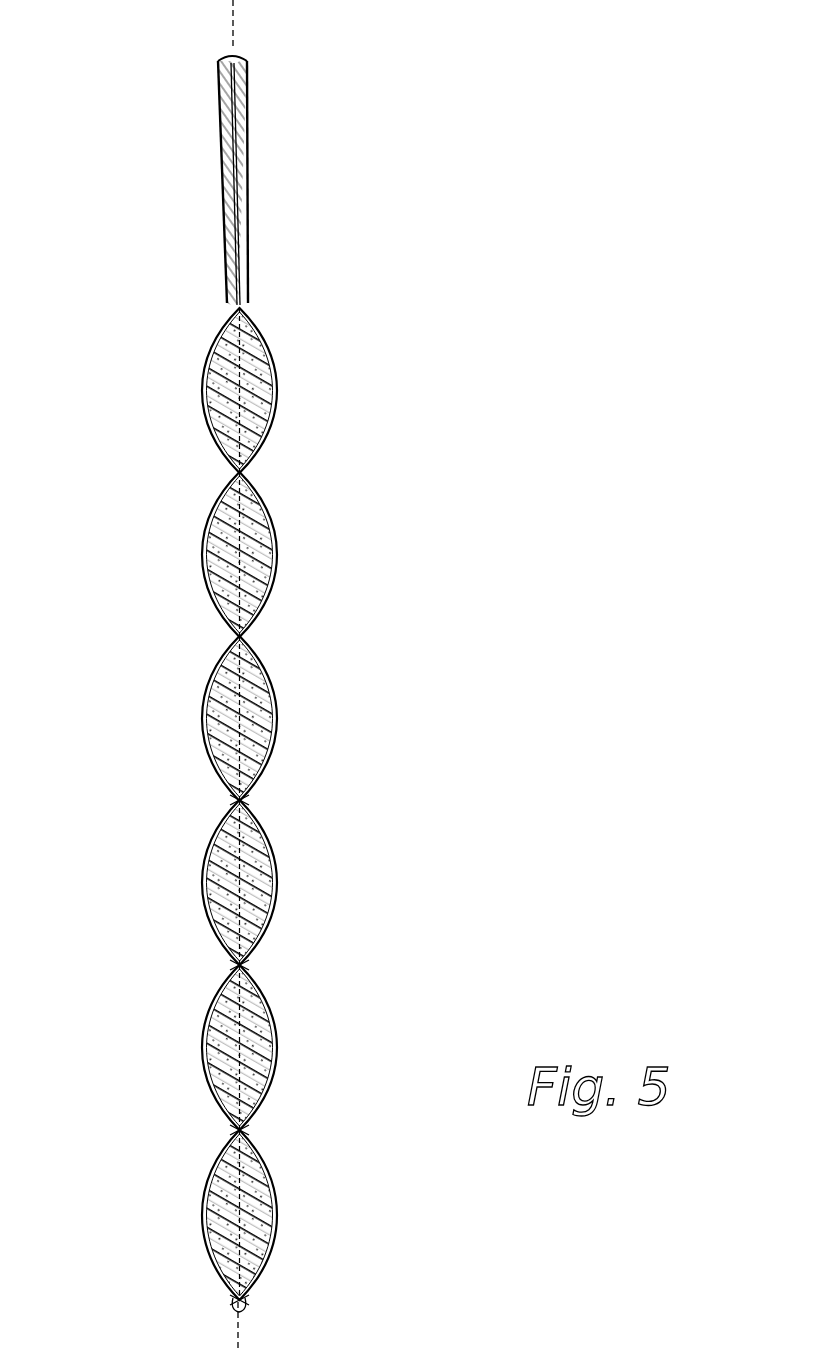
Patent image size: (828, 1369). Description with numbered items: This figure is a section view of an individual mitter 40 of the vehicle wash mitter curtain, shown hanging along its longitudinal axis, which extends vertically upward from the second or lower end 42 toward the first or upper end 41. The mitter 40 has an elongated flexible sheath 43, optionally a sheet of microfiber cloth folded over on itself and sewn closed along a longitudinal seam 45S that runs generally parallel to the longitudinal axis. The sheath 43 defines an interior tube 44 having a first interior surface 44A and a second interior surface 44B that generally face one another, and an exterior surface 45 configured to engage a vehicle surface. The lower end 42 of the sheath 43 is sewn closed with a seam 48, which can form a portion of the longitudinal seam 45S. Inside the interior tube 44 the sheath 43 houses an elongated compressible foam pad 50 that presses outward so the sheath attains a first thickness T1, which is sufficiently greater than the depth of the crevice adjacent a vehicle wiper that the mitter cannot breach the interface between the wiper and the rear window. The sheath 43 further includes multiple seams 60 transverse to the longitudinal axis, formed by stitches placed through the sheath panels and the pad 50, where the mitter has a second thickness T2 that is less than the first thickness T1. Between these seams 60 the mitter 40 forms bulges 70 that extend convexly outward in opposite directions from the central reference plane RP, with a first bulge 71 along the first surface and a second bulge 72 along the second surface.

The mitter 40 is at (447, 451).
The first end 41 is at (269, 168).
The second end 42 is at (308, 1235).
The sheath 43 is at (258, 401).
The interior tube 44 is at (258, 425).
The first interior surface 44A is at (223, 182).
The second interior surface 44B is at (232, 167).
The exterior surface 45 is at (207, 437).
The longitudinal seam 45S is at (235, 400).
The seam 48 is at (246, 1300).
The pad 50 is at (255, 858).
The seams 60 is at (218, 1295).
The bulges 70 is at (310, 993).
The first bulge 71 is at (255, 1195).
The second bulge 72 is at (253, 1215).
The first thickness T1 is at (157, 1048).
The second thickness T2 is at (183, 966).
The reference plane RP is at (169, 1327).